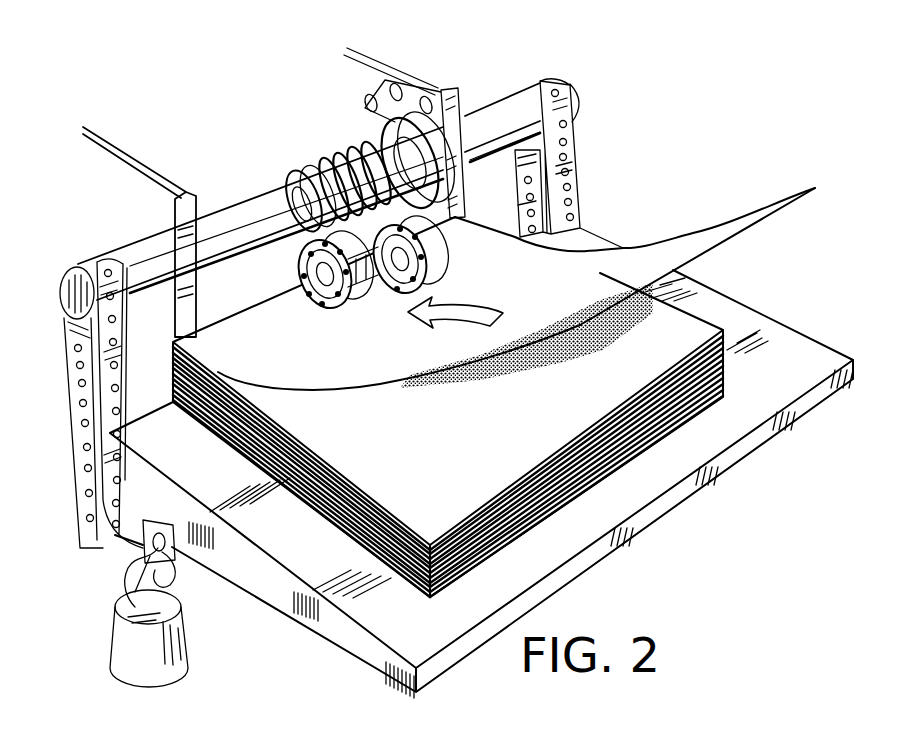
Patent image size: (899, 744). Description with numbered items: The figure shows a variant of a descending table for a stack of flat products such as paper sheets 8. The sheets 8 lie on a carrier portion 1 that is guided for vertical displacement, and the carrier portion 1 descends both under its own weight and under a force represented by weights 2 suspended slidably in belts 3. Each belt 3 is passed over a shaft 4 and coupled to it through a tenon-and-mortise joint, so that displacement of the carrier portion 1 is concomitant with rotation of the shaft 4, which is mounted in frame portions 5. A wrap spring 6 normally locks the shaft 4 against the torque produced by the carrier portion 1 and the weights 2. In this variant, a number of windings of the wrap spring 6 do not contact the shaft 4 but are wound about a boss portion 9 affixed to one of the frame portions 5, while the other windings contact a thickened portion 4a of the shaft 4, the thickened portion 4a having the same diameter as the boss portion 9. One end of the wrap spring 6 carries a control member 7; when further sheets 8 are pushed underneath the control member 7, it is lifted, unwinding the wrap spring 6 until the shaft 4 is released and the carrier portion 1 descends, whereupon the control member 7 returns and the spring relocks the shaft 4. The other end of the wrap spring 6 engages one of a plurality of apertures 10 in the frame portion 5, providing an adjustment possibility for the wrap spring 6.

The carrier portion 1 is at (390, 630).
The weight 2 is at (113, 647).
The belt 3 is at (75, 462).
The shaft 4 is at (238, 215).
The thickened portion 4a is at (342, 173).
The frame portion 5 is at (358, 62).
The wrap spring 6 is at (300, 163).
The control member 7 is at (380, 273).
The paper sheets 8 is at (745, 222).
The boss portion 9 is at (390, 150).
The apertures 10 is at (420, 97).